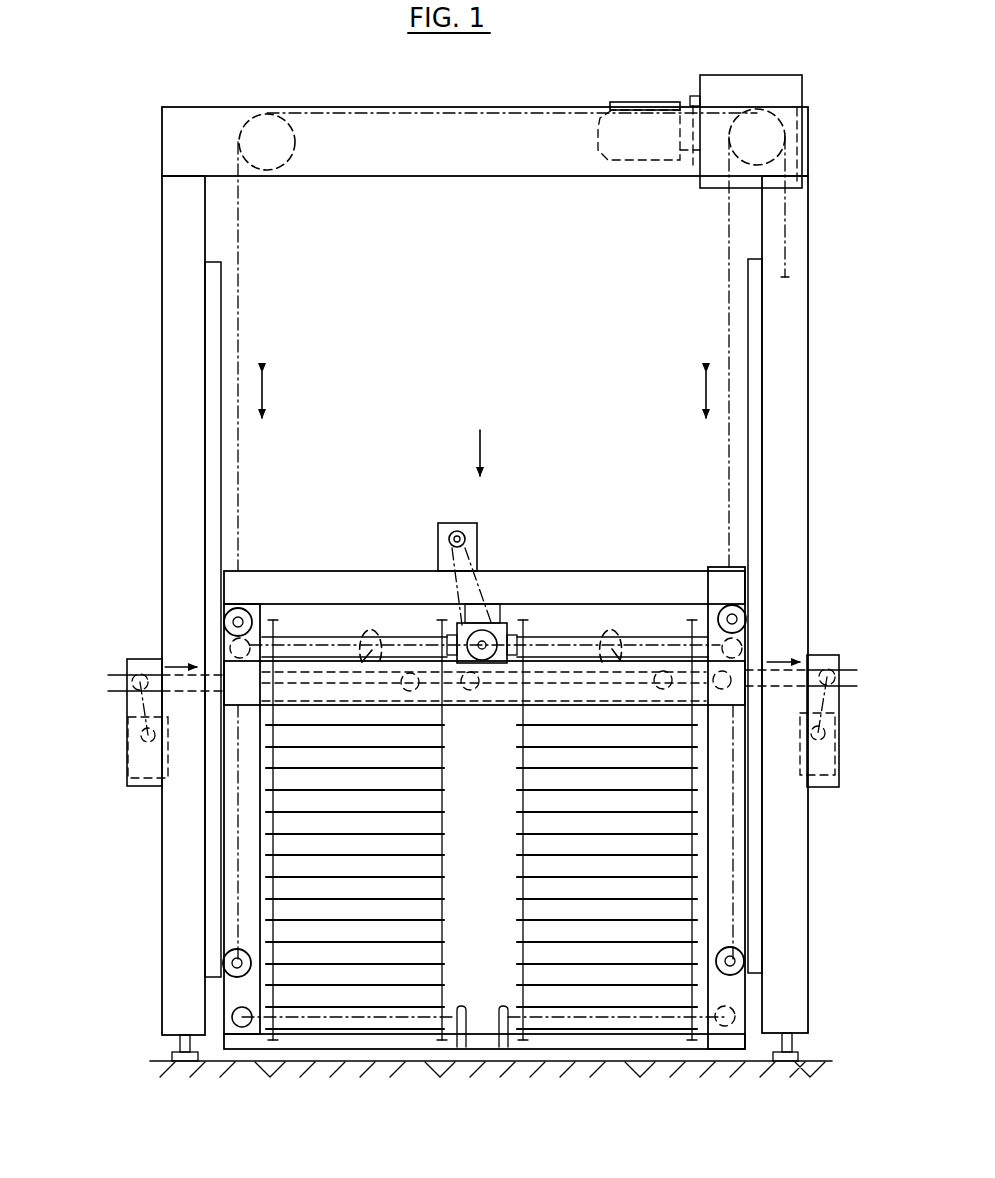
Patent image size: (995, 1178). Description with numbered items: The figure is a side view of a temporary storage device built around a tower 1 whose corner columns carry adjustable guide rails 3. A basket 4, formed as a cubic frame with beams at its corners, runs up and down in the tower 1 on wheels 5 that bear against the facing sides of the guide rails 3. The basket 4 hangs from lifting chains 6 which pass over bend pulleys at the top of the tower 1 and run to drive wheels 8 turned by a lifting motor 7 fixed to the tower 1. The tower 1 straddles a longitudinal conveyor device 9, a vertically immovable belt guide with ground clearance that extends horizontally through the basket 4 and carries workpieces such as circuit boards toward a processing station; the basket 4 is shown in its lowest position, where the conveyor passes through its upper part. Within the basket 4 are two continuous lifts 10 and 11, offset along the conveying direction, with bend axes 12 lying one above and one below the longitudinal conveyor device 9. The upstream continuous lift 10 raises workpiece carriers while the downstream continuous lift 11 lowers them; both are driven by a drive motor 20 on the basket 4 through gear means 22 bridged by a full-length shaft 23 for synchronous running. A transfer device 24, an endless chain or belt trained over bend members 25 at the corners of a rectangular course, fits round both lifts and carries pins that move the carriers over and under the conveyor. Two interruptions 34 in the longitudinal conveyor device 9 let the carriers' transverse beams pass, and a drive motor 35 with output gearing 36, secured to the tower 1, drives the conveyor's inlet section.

The tower 1 is at (816, 211).
The guide rails 3 is at (757, 296).
The basket 4 is at (681, 566).
The wheels 5 is at (742, 619).
The lifting chains 6 is at (728, 277).
The lifting motor 7 is at (636, 128).
The drive wheels 8 is at (748, 132).
The longitudinal conveyor device 9 is at (118, 672).
The upstream continuous lift 10 is at (268, 872).
The downstream continuous lift 11 is at (696, 912).
The bend axes 12 is at (645, 645).
The drive motor 20 is at (443, 529).
The gear means 22 is at (488, 600).
The shaft 23 is at (466, 535).
The transfer device 24 is at (232, 853).
The bend members 25 is at (240, 1023).
The interruptions 34 is at (705, 686).
The drive motor 35 is at (146, 773).
The output gearing 36 is at (142, 727).